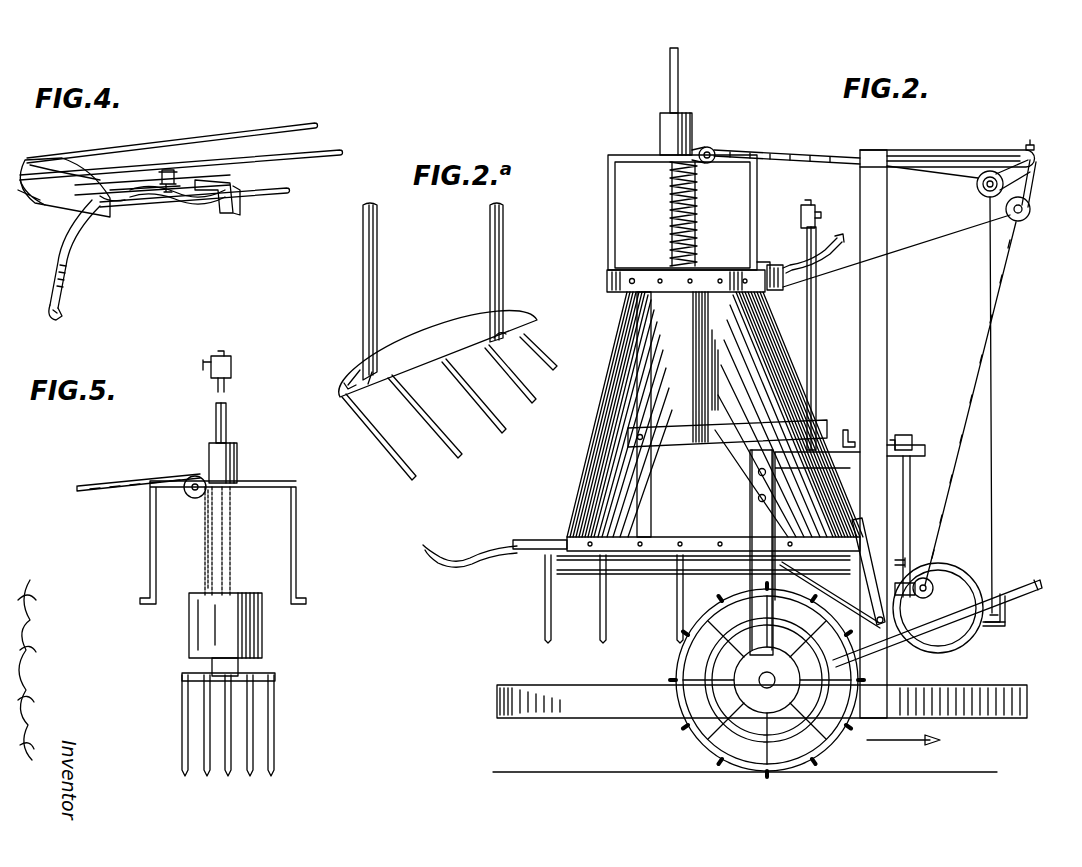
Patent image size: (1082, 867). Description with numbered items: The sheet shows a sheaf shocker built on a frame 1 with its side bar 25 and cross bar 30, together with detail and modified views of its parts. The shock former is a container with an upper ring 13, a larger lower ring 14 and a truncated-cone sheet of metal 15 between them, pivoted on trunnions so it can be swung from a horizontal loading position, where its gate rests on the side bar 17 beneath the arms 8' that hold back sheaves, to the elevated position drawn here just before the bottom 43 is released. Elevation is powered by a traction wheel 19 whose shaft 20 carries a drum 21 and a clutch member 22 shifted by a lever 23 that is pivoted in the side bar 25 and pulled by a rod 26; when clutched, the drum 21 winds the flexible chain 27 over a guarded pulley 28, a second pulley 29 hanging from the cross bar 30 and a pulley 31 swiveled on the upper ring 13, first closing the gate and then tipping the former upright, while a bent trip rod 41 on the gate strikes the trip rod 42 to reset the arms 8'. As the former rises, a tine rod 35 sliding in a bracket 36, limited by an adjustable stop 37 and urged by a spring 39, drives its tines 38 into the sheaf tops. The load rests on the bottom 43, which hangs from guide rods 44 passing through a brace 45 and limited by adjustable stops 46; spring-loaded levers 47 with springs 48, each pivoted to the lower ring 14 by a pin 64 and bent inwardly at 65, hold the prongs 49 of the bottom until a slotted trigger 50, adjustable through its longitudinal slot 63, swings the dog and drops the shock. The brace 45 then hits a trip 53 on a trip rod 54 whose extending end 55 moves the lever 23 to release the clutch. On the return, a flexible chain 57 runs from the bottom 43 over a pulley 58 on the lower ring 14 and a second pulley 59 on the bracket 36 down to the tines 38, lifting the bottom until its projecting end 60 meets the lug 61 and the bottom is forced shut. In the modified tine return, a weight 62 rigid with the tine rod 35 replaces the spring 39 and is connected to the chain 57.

In FIG. 2, the frame 1 is at (887, 332).
In FIG. 2, the arms 8' is at (614, 599).
In FIG. 2, the upper ring 13 is at (617, 286).
In FIG. 2, the lower ring 14 is at (568, 535).
In FIG. 2, the sheet of metal 15 is at (613, 366).
In FIG. 2, the side bar 17 is at (542, 718).
In FIG. 2, the traction wheel 19 is at (690, 738).
In FIG. 2, the shaft 20 is at (760, 680).
In FIG. 2, the drum 21 is at (730, 625).
In FIG. 2, the clutch member 22 is at (872, 622).
In FIG. 2, the lever 23 is at (936, 620).
In FIG. 2, the side bar 25 is at (887, 383).
In FIG. 2, the rod 26 is at (1028, 580).
In FIG. 2, the flexible chain 27 is at (907, 248).
In FIG. 2, the pulley 28 is at (935, 576).
In FIG. 2, the second pulley 29 is at (1030, 210).
In FIG. 2, the cross bar 30 is at (985, 152).
In FIG. 2, the pulley 31 is at (780, 266).
In FIG. 5, the tine rod 35 is at (226, 405).
In FIG. 2, the tine rod 35 is at (670, 97).
In FIG. 5, the bracket 36 is at (297, 490).
In FIG. 2, the bracket 36 is at (608, 193).
In FIG. 5, the adjustable stop 37 is at (233, 456).
In FIG. 5, the tines 38 is at (250, 698).
In FIG. 2, the spring 39 is at (670, 220).
In FIG. 2, the bent trip rod 41 is at (838, 238).
In FIG. 2, the trip rod 42 is at (462, 563).
In FIG. 4, the bottom 43 is at (58, 162).
In FIG. 2, the bottom 43 is at (822, 580).
In FIG. 2A, the guide rods 44 is at (363, 282).
In FIG. 2, the guide rods 44 is at (816, 378).
In FIG. 2, the brace 45 is at (752, 427).
In FIG. 2, the adjustable stops 46 is at (801, 212).
In FIG. 4, the lever 47 is at (125, 190).
In FIG. 4, the spring 48 is at (200, 196).
In FIG. 4, the prongs 49 is at (287, 190).
In FIG. 2A, the prongs 49 is at (492, 443).
In FIG. 2, the prongs 49 is at (650, 574).
In FIG. 4, the trigger 50 is at (65, 243).
In FIG. 2, the trip 53 is at (845, 430).
In FIG. 2, the trip rod 54 is at (915, 460).
In FIG. 2, the extending end 55 is at (1000, 625).
In FIG. 5, the flexible chain 57 is at (118, 478).
In FIG. 2, the flexible chain 57 is at (785, 152).
In FIG. 2, the pulley 58 is at (977, 185).
In FIG. 5, the second pulley 59 is at (192, 478).
In FIG. 2, the second pulley 59 is at (709, 147).
In FIG. 2A, the projecting end 60 is at (430, 320).
In FIG. 2, the projecting end 60 is at (905, 540).
In FIG. 2, the lug 61 is at (910, 505).
In FIG. 5, the weight 62 is at (200, 622).
In FIG. 4, the longitudinal slot 63 is at (64, 305).
In FIG. 4, the pin 64 is at (172, 178).
In FIG. 4, the inwardly bent portion 65 is at (212, 208).